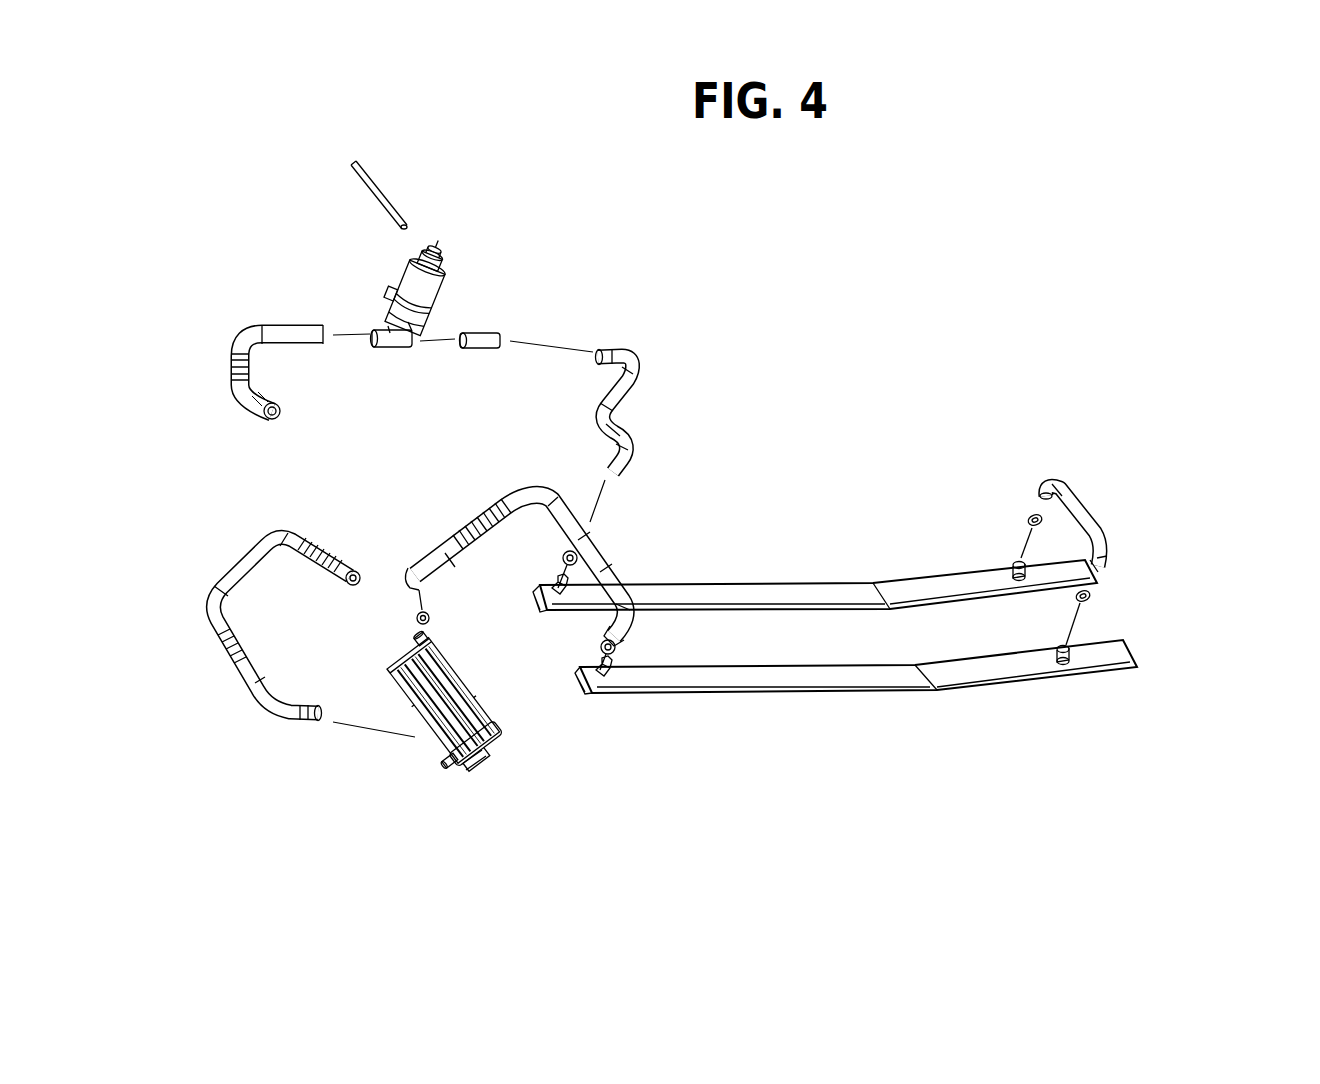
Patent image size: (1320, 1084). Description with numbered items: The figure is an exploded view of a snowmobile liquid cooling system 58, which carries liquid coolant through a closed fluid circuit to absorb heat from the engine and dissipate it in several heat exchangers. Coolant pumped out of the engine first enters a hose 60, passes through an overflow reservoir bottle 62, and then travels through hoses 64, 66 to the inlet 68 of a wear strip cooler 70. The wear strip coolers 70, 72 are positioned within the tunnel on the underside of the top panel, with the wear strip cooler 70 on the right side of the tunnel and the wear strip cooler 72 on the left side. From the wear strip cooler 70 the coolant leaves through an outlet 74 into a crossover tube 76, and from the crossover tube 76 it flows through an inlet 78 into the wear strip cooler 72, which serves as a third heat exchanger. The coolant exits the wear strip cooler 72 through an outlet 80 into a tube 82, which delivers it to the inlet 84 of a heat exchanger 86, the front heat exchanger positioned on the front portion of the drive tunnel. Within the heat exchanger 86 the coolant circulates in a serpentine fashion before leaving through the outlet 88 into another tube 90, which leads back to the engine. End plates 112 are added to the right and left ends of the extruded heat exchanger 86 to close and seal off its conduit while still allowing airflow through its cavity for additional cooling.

The liquid cooling system 58 is at (1148, 760).
The hose 60 is at (312, 323).
The overflow reservoir bottle 62 is at (442, 274).
The hose 64 is at (500, 331).
The hose 66 is at (632, 376).
The inlet 68 is at (548, 602).
The wear strip cooler 70 is at (851, 598).
The wear strip cooler 72 is at (873, 672).
The outlet 74 is at (1012, 568).
The crossover tube 76 is at (1078, 505).
The inlet 78 is at (1062, 668).
The outlet 80 is at (603, 685).
The tube 82 is at (443, 555).
The inlet 84 is at (436, 636).
The heat exchanger 86 is at (493, 717).
The outlet 88 is at (437, 746).
The tube 90 is at (235, 563).
The end plates 112 is at (477, 763).